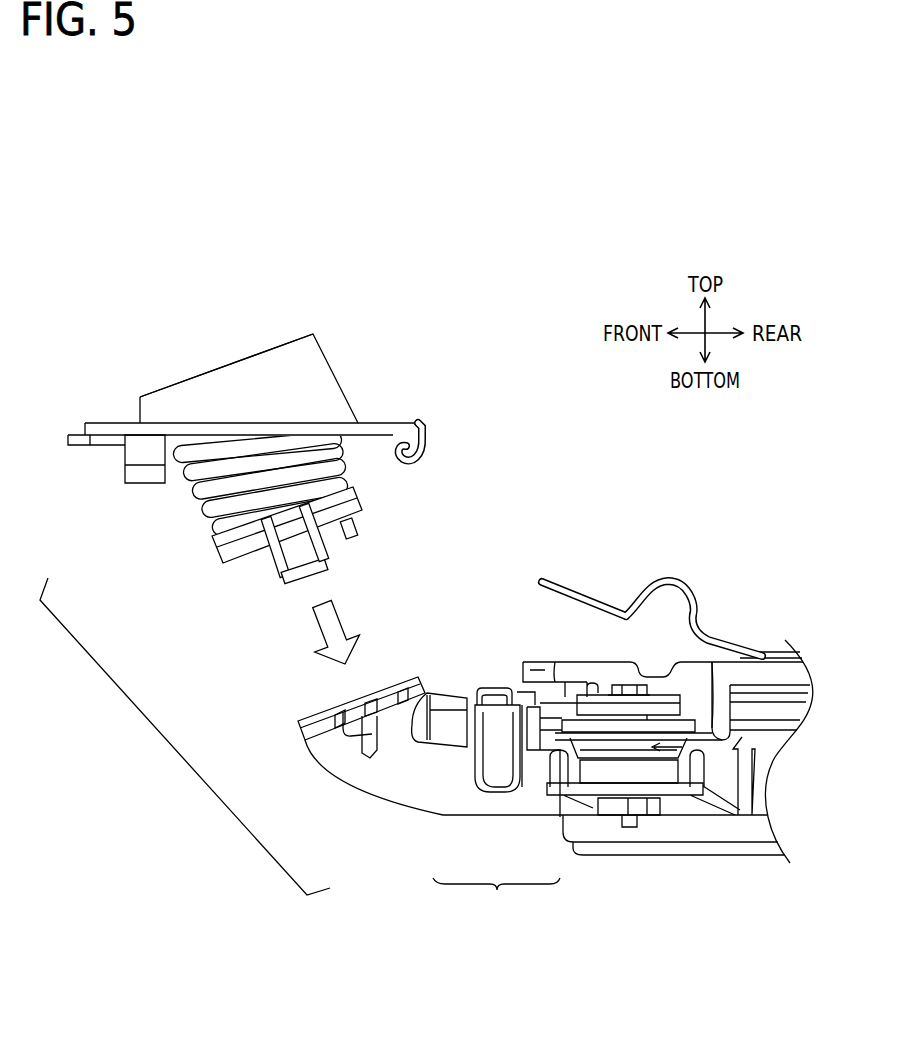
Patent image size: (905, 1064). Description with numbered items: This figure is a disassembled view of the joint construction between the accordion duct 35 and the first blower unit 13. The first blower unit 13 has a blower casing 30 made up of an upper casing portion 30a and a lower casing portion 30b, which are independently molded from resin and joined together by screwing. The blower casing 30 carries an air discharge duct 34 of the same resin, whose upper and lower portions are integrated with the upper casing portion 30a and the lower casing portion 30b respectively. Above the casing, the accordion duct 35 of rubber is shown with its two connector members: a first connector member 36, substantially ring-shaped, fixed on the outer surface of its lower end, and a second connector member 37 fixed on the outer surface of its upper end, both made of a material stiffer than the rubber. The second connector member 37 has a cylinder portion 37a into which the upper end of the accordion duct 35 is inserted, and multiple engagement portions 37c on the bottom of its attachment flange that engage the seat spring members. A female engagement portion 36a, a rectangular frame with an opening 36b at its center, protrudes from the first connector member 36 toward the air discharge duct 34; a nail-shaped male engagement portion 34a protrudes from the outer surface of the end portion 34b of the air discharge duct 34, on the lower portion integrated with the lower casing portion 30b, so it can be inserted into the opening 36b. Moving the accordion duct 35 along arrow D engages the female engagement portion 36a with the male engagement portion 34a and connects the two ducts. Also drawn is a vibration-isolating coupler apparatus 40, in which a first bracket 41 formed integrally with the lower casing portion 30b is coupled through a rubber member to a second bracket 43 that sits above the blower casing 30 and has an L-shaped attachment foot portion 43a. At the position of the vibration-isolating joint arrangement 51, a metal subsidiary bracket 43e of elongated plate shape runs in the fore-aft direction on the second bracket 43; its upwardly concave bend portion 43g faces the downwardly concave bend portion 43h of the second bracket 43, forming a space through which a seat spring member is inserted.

The second connector member 37 is at (348, 357).
The cylinder portion 37a is at (267, 368).
The engagement portions 37c is at (125, 470).
The accordion duct 35 is at (340, 465).
The first connector member 36 is at (378, 501).
The female engagement portion 36a is at (273, 566).
The opening 36b is at (303, 553).
The arrow D is at (312, 628).
The air discharge duct 34 is at (420, 800).
The male engagement portion 34a is at (370, 760).
The end portion 34b is at (300, 740).
The blower casing 30 is at (496, 899).
The upper casing portion 30a is at (520, 803).
The lower casing portion 30b is at (500, 717).
The first blower unit 13 is at (613, 867).
The first bracket 41 is at (668, 787).
The vibration-isolating coupler apparatus 40 is at (690, 745).
The second bracket 43 is at (585, 662).
The attachment foot portion 43a is at (711, 740).
The subsidiary bracket 43e is at (605, 598).
The bend portion 43g is at (693, 585).
The bend portion 43h is at (670, 662).
The vibration-isolating joint arrangement 51 is at (679, 567).